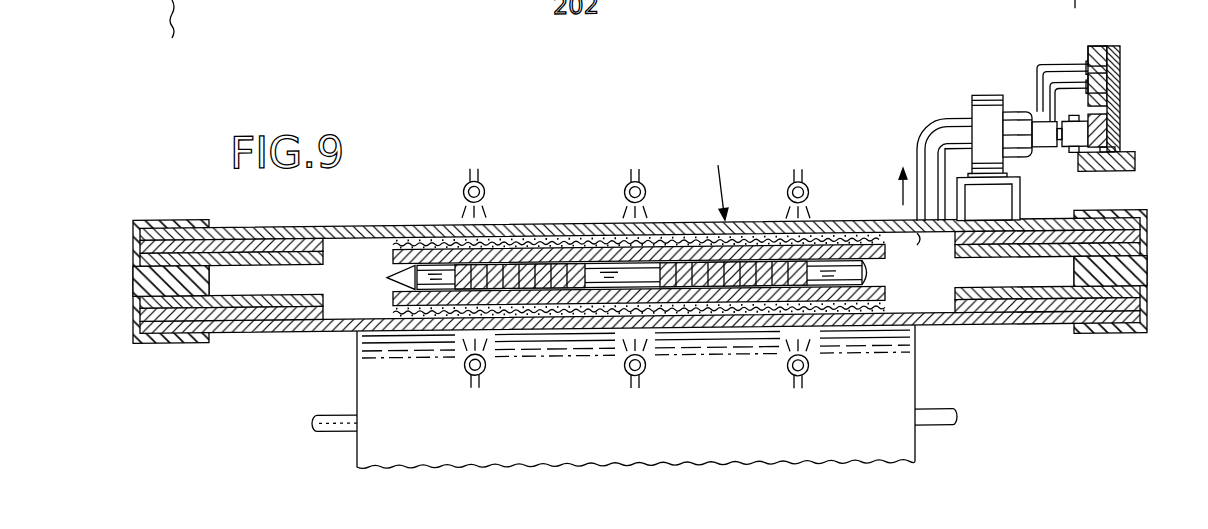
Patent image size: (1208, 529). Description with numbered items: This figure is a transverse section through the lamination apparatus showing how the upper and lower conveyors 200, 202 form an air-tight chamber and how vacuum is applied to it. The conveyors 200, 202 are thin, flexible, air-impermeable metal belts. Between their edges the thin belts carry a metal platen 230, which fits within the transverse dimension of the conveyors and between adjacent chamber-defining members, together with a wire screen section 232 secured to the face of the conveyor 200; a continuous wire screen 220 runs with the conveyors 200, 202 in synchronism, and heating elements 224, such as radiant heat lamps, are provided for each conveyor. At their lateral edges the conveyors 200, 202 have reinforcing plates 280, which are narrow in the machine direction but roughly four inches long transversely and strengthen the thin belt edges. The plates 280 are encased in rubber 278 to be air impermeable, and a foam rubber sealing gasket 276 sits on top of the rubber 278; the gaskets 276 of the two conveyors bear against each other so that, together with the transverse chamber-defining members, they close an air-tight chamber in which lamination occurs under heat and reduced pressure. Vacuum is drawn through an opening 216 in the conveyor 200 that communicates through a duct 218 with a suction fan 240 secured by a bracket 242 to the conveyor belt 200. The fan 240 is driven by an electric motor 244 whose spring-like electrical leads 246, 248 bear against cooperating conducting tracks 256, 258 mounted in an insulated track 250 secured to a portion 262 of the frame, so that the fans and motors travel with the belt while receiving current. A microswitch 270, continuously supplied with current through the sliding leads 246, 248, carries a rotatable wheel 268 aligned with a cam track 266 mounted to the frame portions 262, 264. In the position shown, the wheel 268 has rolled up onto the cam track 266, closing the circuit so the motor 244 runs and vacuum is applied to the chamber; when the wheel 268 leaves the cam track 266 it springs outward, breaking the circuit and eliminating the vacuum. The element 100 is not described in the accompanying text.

The heating element core 100 is at (866, 280).
The conveyor 200 is at (715, 179).
The conveyor 202 is at (562, 338).
The opening 216 is at (926, 239).
The duct 218 is at (921, 217).
The wire screen 220 is at (722, 328).
The heating elements 224 is at (463, 188).
The metal platen 230 is at (376, 277).
The wire screen section 232 is at (564, 240).
The suction fan 240 is at (982, 146).
The bracket 242 is at (1017, 204).
The electric motor 244 is at (1020, 119).
The electrical lead 246 is at (1040, 69).
The electrical lead 248 is at (1062, 91).
The insulated track 250 is at (1104, 50).
The conducting track 256 is at (1115, 66).
The conducting track 258 is at (1117, 90).
The frame portion 262 is at (1113, 52).
The frame portion 264 is at (1135, 167).
The cam track 266 is at (1098, 142).
The rotatable wheel 268 is at (1110, 177).
The microswitch 270 is at (1047, 151).
The sealing gasket 276 is at (127, 276).
The rubber 278 is at (174, 215).
The reinforcing plate 280 is at (140, 241).